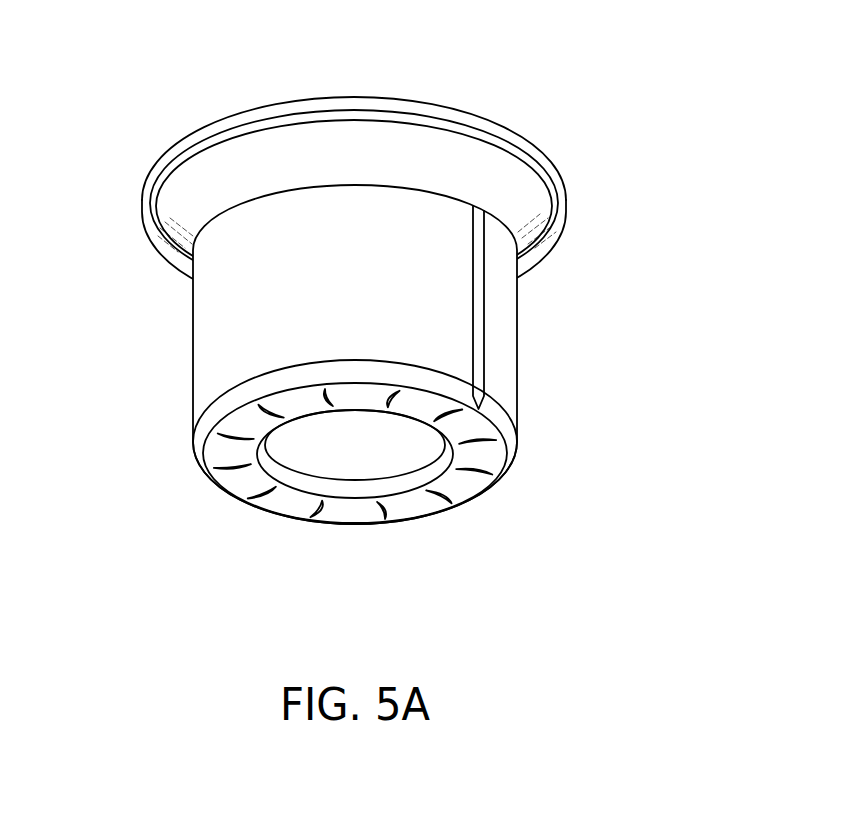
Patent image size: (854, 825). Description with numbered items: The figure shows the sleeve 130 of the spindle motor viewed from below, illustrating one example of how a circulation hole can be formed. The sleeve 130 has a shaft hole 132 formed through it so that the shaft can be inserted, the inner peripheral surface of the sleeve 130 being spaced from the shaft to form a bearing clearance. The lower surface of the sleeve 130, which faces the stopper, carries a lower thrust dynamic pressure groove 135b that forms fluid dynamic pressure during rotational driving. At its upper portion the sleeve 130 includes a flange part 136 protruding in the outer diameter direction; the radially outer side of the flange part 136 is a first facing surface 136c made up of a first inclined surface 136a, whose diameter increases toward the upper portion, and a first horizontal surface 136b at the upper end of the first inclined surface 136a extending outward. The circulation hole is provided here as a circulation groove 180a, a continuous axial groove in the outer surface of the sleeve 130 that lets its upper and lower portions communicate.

The sleeve 130 is at (400, 315).
The shaft hole 132 is at (382, 463).
The lower thrust dynamic pressure groove 135b is at (226, 468).
The flange part 136 is at (175, 211).
The first inclined surface 136a is at (533, 240).
The first horizontal surface 136b is at (564, 210).
The first facing surface 136c is at (454, 203).
The circulation groove 180a is at (478, 334).